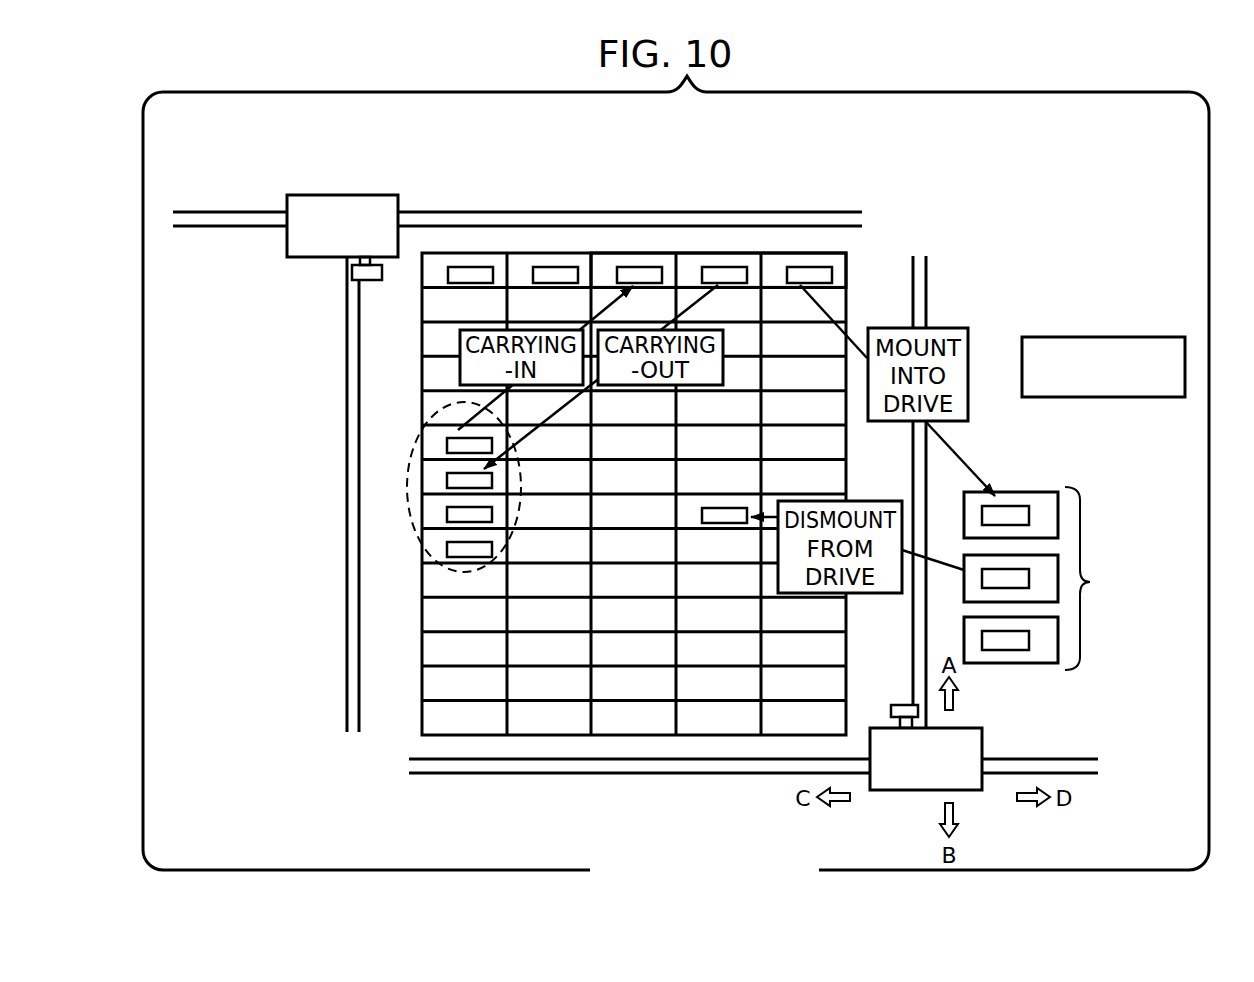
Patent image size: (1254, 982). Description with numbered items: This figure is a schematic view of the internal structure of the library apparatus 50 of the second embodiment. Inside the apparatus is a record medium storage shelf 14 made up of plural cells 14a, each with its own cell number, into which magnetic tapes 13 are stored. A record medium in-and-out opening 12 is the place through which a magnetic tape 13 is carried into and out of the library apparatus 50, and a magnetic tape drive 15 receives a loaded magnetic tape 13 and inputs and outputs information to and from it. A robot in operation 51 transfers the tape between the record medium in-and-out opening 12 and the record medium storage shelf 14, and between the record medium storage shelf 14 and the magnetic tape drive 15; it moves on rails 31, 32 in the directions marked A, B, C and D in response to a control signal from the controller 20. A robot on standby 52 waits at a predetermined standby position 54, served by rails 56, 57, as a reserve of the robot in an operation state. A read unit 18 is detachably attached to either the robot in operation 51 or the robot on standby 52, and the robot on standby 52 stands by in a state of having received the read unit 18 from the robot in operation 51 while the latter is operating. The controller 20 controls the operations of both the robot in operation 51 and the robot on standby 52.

The library apparatus 50 is at (882, 197).
The standby position 54 is at (307, 168).
The robot on standby 52 is at (366, 194).
The rail 57 is at (438, 211).
The rail 56 is at (346, 463).
The read unit 18 is at (372, 282).
The record medium storage shelf 14 is at (648, 252).
The cell 14a is at (838, 262).
The magnetic tape 13 is at (622, 265).
The record medium in-and-out opening 12 is at (413, 450).
The controller 20 is at (1120, 336).
The rail 31 is at (912, 640).
The rail 32 is at (1070, 759).
The robot in operation 51 is at (983, 742).
The magnetic tape drive 15 is at (1047, 578).